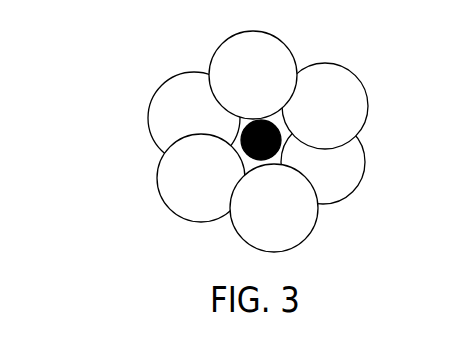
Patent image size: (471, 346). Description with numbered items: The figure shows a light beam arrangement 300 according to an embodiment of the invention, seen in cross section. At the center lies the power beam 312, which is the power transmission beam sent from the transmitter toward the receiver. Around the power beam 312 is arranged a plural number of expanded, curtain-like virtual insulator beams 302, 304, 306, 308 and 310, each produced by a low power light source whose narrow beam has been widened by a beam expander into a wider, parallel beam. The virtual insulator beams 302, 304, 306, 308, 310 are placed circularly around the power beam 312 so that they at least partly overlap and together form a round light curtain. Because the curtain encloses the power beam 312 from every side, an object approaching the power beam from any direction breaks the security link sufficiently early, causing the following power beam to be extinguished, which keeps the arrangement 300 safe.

The light beam arrangement 300 is at (220, 141).
The first cable 302 is at (253, 75).
The second cable 304 is at (325, 106).
The third cable 306 is at (323, 162).
The fourth cable 308 is at (274, 208).
The fifth cable 310 is at (201, 178).
The power beam 312 is at (194, 118).